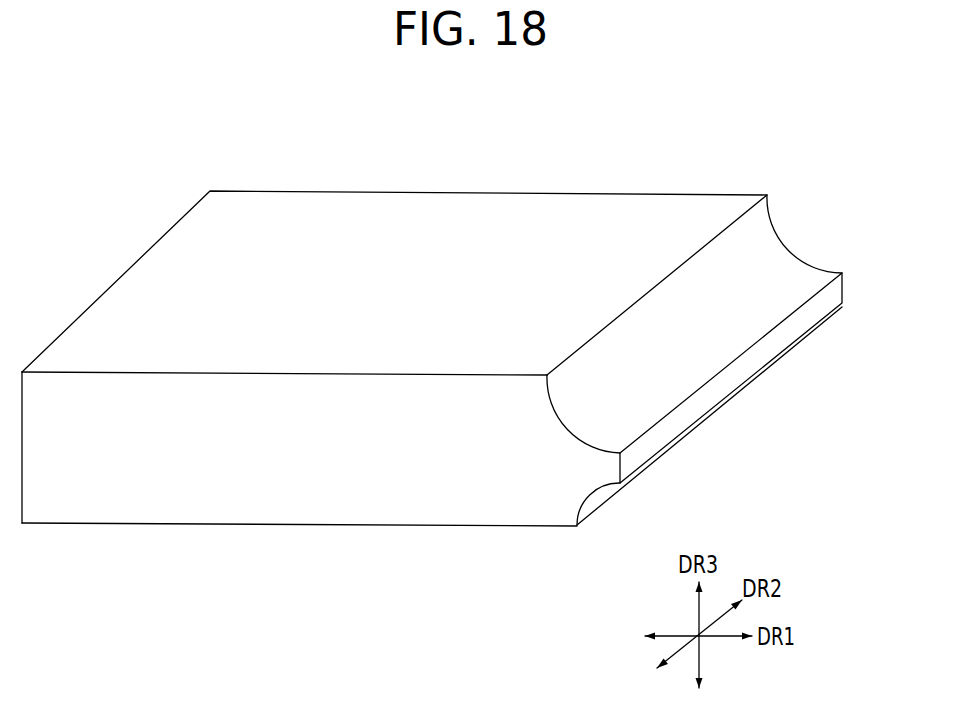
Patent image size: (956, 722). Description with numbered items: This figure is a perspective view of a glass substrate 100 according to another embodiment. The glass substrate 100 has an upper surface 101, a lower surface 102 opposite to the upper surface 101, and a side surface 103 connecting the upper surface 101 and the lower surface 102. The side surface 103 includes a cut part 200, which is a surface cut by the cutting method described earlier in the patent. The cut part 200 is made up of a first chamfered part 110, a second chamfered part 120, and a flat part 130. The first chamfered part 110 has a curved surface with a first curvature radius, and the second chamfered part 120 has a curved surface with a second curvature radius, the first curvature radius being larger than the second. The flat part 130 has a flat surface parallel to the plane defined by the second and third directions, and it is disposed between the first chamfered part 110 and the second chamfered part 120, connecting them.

The glass substrate 100 is at (438, 349).
The upper surface 101 is at (450, 222).
The lower surface 102 is at (431, 548).
The side surface 103 is at (298, 497).
The first chamfered part 110 is at (647, 392).
The second chamfered part 120 is at (745, 507).
The flat part 130 is at (717, 392).
The cut part 200 is at (715, 360).